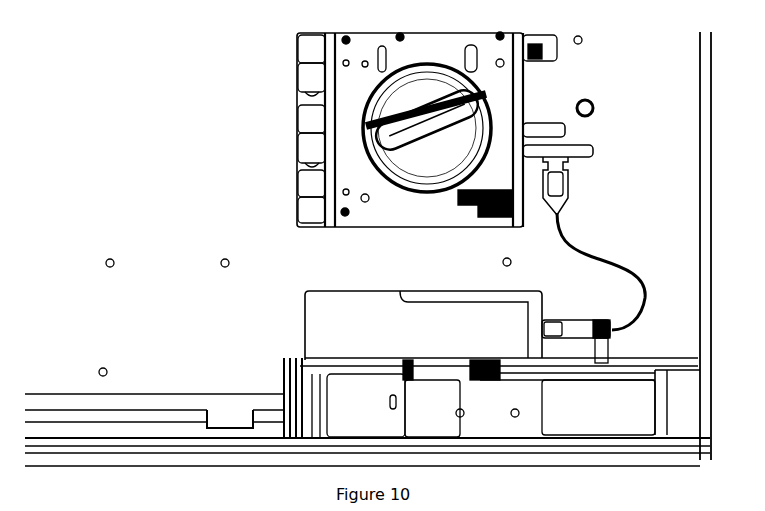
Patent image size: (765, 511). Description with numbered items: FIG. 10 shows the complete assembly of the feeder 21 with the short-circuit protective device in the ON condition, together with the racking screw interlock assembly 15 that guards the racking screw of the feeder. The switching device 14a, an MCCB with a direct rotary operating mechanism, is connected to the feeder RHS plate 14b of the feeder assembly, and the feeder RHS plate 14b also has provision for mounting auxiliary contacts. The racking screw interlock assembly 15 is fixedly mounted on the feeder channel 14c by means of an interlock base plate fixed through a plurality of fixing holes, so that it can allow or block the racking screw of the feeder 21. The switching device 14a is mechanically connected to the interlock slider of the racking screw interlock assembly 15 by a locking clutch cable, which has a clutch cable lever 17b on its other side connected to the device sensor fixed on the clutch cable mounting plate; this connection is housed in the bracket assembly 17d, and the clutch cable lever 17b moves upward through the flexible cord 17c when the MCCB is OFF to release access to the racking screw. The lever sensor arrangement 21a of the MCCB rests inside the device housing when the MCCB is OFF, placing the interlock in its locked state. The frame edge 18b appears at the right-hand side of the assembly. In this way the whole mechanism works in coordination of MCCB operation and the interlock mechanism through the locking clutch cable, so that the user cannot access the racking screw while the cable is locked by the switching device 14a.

The feeder 21 is at (155, 78).
The frame edge 18b is at (693, 65).
The switching device 14a is at (283, 198).
The lever sensor arrangement 21a is at (537, 127).
The clutch cable lever 17b is at (560, 138).
The bracket assembly 17d is at (590, 151).
The flexible cord 17c is at (568, 240).
The racking screw interlock assembly 15 is at (293, 332).
The feeder RHS plate 14b is at (273, 372).
The feeder channel 14c is at (652, 362).